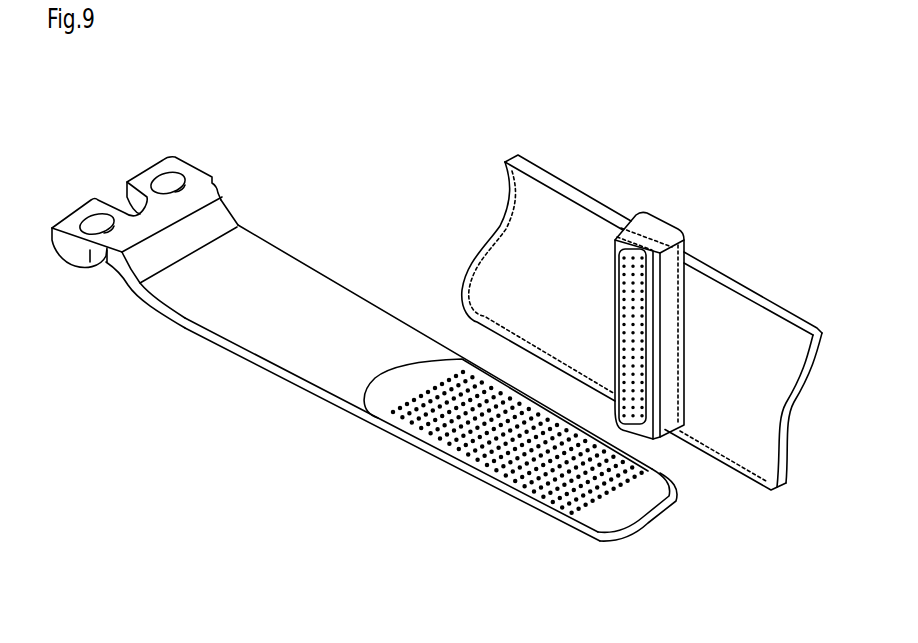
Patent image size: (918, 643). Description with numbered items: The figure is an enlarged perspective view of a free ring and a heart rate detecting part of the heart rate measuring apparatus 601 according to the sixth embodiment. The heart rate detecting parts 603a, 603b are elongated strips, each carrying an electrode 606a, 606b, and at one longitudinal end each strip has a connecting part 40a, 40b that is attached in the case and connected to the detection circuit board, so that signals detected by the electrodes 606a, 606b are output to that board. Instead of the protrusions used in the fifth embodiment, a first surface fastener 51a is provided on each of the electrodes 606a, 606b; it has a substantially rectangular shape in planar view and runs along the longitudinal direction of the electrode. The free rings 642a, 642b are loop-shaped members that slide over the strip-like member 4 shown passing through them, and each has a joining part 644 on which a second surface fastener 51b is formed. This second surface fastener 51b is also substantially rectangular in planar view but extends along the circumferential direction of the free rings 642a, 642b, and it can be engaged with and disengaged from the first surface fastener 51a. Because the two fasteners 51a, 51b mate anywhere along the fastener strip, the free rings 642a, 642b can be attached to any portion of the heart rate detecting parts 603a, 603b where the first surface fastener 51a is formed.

The connecting part 40a is at (162, 176).
The connecting part 40b is at (200, 167).
The heart rate measuring apparatus 601 is at (450, 158).
The free ring 642a is at (651, 287).
The free ring 642b is at (667, 221).
The belt 4 is at (777, 303).
The second surface fastener 51b is at (622, 334).
The joining part 644 is at (658, 342).
The heart rate detecting part 603a is at (183, 306).
The heart rate detecting part 603b is at (187, 328).
The electrode 606a is at (418, 383).
The electrode 606b is at (310, 372).
The first surface fastener 51a is at (484, 471).